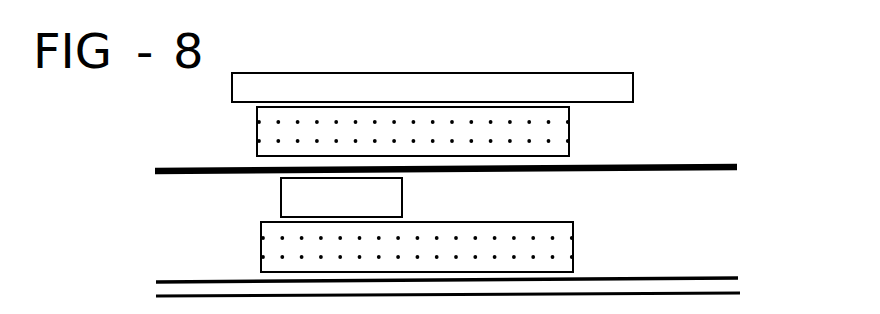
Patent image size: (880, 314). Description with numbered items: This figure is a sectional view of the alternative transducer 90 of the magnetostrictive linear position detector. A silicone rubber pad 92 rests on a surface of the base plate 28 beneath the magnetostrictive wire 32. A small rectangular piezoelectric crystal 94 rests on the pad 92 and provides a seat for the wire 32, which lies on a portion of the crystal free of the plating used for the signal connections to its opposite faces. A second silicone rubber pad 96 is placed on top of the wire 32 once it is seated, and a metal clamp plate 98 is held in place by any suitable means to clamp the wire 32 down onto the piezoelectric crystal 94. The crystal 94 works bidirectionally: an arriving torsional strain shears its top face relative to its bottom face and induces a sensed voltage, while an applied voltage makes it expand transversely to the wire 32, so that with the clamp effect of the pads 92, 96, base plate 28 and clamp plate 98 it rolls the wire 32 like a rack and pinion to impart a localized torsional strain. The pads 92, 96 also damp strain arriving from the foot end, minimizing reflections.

The base plate 28 is at (700, 277).
The magnetostrictive wire 32 is at (203, 166).
The alternative transducer 90 is at (670, 97).
The silicone rubber pad 92 is at (574, 246).
The piezoelectric crystal 94 is at (281, 202).
The second silicone rubber pad 96 is at (571, 128).
The metal clamp plate 98 is at (352, 83).